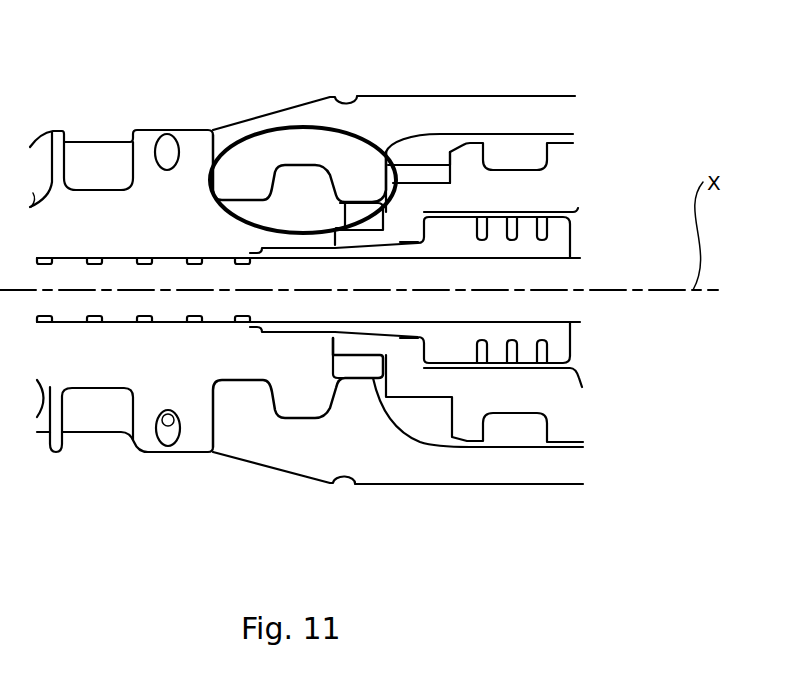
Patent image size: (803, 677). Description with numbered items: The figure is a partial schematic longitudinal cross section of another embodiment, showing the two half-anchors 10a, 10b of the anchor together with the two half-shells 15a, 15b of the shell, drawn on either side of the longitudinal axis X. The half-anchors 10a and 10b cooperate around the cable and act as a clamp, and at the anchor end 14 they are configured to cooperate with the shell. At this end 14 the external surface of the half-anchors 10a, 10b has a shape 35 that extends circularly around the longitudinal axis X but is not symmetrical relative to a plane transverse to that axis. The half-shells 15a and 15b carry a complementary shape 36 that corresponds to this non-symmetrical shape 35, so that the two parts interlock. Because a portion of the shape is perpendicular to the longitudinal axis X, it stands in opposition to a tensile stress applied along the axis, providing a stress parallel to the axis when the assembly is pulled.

The half-anchor 10a is at (190, 150).
The half-anchor 10b is at (198, 435).
The end of the anchor 14 is at (312, 183).
The half-shell 15a is at (418, 107).
The half-shell 15b is at (363, 443).
The shape of the external surface 35 is at (283, 183).
The complementary shape 36 is at (300, 412).